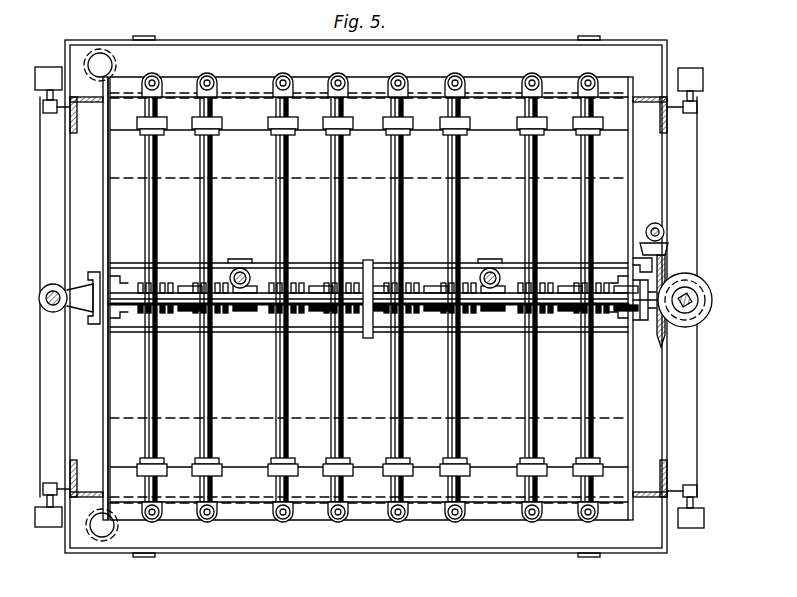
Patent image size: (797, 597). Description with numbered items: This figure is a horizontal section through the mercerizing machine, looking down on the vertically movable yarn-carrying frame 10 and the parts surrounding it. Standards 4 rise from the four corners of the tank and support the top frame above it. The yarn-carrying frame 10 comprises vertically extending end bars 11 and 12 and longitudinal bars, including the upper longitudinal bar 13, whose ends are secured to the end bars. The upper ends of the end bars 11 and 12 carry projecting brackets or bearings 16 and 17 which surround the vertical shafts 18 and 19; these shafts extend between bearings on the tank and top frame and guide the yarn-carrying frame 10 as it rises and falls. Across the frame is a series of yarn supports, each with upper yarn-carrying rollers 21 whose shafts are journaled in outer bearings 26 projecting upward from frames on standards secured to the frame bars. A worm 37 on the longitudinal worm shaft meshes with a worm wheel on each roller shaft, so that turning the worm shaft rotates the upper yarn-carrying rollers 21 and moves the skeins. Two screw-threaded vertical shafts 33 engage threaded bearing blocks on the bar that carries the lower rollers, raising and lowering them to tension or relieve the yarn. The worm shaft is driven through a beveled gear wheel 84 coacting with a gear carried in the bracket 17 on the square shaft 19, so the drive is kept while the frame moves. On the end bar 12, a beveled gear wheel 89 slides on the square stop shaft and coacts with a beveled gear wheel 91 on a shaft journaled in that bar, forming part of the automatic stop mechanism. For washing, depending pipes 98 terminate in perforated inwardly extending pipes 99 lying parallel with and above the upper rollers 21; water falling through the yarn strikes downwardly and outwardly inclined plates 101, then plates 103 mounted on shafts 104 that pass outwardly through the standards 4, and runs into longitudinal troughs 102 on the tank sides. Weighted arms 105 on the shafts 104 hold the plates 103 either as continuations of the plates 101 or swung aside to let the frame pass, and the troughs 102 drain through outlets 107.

The standards 4 is at (662, 125).
The yarn-carrying frame 10 is at (605, 278).
The end bar 11 is at (100, 326).
The end bar 12 is at (642, 322).
The upper longitudinal bar 13 is at (315, 302).
The bracket or bearing 16 is at (46, 305).
The bracket or bearing 17 is at (702, 320).
The shaft 18 is at (47, 291).
The shaft 19 is at (692, 299).
The upper yarn-carrying rollers 21 is at (391, 232).
The outer bearings 26 is at (470, 122).
The vertically arranged shafts 33 is at (241, 268).
The worm 37 is at (284, 282).
The beveled gear wheel 84 is at (666, 266).
The beveled gear wheel 89 is at (665, 230).
The beveled gear wheel 91 is at (668, 249).
The depending pipes 98 is at (283, 76).
The pipes 99 is at (586, 166).
The inclined plates 101 is at (113, 232).
The troughs 102 is at (640, 50).
The plates 103 is at (103, 163).
The shafts 104 is at (58, 113).
The weighted arms 105 is at (50, 70).
The outlets 107 is at (100, 60).